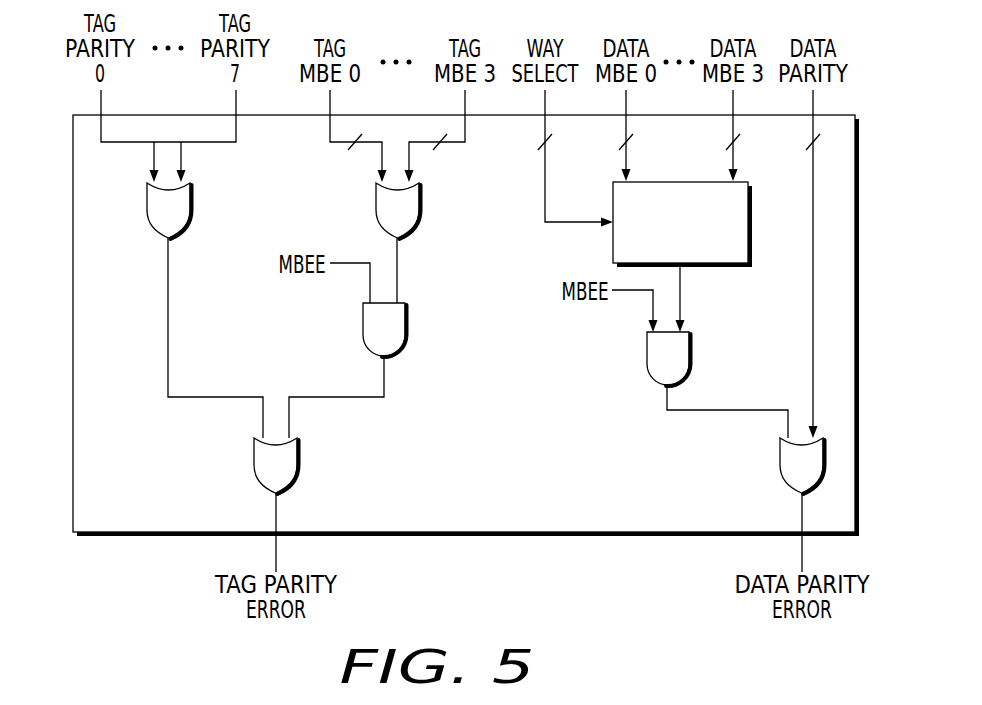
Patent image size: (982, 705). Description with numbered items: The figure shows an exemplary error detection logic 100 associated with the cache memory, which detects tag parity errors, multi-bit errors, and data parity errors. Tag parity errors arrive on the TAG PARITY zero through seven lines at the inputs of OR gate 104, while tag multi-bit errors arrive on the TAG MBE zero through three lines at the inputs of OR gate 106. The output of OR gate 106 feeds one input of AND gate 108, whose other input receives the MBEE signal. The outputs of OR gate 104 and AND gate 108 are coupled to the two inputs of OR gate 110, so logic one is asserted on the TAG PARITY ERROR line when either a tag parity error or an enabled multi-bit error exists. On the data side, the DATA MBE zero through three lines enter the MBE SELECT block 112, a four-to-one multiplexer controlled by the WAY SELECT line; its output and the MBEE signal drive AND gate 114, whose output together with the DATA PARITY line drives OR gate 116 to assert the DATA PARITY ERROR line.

The error detection logic 100 is at (110, 504).
The OR gate 104 is at (192, 208).
The OR gate 106 is at (421, 208).
The AND gate 108 is at (407, 330).
The OR gate 110 is at (299, 476).
The MBE SELECT block 112 is at (733, 267).
The AND gate 114 is at (645, 351).
The OR gate 116 is at (778, 461).